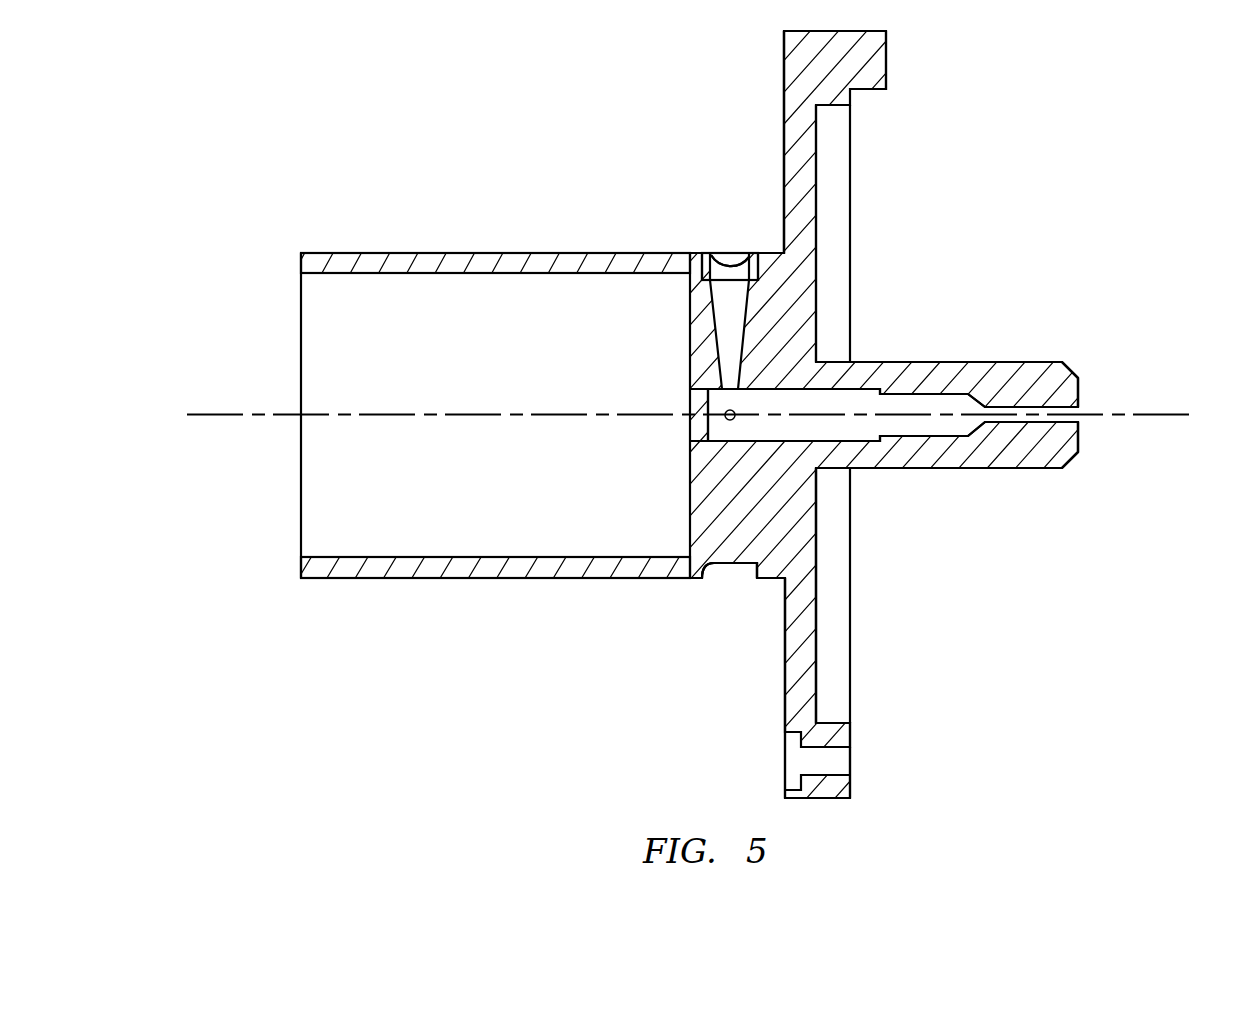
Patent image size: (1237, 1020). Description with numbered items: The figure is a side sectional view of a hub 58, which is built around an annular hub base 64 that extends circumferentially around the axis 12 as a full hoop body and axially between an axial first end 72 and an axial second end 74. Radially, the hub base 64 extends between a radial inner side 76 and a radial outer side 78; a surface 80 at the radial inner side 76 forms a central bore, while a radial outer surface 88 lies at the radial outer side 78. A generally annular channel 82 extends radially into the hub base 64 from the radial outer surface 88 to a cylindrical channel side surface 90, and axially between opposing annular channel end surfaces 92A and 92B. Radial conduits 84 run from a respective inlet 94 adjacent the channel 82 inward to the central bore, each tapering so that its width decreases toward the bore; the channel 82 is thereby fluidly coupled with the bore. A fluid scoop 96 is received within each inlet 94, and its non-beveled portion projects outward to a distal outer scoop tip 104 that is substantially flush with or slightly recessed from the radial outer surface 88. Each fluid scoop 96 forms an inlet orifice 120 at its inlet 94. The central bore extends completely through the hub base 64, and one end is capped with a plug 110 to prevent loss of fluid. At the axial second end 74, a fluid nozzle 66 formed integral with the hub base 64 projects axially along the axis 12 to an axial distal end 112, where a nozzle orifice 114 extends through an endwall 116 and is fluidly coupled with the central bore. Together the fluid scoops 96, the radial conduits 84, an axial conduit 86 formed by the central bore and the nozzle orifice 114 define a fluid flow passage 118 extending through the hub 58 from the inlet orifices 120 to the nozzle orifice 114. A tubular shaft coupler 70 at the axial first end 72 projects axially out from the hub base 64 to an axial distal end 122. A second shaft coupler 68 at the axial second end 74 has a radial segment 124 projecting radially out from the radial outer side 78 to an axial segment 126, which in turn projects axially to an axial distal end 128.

The hub 58 is at (371, 118).
The axis 12 is at (1180, 416).
The shaft coupler 70 is at (427, 590).
The axial distal end 122 is at (300, 566).
The axial first end 72 is at (688, 514).
The radial conduit 84 is at (723, 315).
The inlet 94 is at (709, 254).
The distal outer scoop tip 104 is at (752, 253).
The fluid scoop 96 is at (738, 262).
The inlet orifice 120 is at (721, 251).
The axial conduit 86 is at (850, 400).
The plug 110 is at (690, 428).
The fluid flow passage 118 is at (749, 432).
The radial inner side 76 is at (880, 247).
The surface 80 is at (823, 390).
The radial outer side 78 is at (848, 142).
The radial outer surface 88 is at (782, 253).
The channel side surface 90 is at (725, 575).
The channel 82 is at (737, 575).
The channel end surface 92A is at (713, 583).
The channel end surface 92B is at (748, 580).
The hub base 64 is at (819, 521).
The axial second end 74 is at (816, 549).
The radial segment 124 is at (785, 112).
The axial segment 126 is at (862, 31).
The axial distal end 128 is at (887, 62).
The shaft coupler 68 is at (769, 689).
The fluid nozzle 66 is at (978, 361).
The endwall 116 is at (1035, 375).
The nozzle orifice 114 is at (1075, 410).
The axial distal end 112 is at (1078, 438).